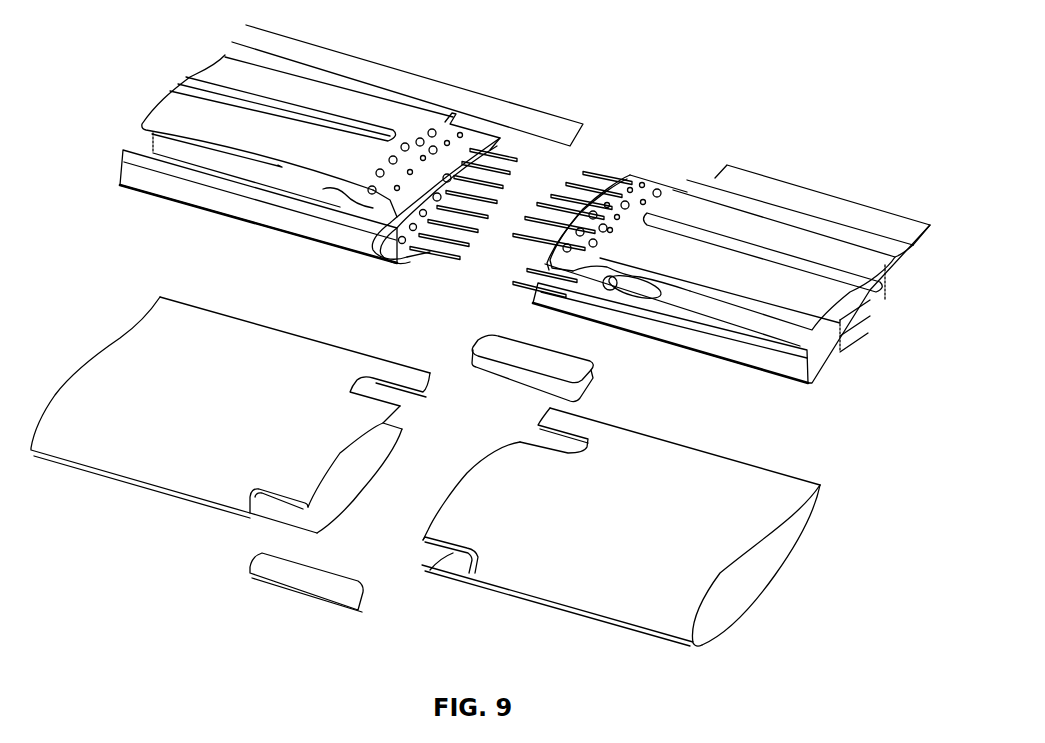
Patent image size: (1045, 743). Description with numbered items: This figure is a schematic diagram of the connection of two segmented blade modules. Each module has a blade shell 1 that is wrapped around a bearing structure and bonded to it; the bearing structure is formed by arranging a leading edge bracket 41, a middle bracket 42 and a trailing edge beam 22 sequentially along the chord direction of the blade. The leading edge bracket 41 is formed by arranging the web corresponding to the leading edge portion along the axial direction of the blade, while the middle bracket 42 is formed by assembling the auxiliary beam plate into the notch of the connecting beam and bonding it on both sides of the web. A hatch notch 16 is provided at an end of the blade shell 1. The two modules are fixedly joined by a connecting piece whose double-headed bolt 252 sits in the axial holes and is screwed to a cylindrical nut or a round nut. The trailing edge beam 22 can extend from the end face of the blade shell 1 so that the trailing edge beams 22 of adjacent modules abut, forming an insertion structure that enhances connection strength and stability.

The blade shell 1 is at (425, 481).
The hatch notch 16 is at (410, 392).
The trailing edge beam 22 is at (530, 113).
The leading edge bracket 41 is at (343, 243).
The middle bracket 42 is at (186, 76).
The double-headed bolt 252 is at (597, 177).